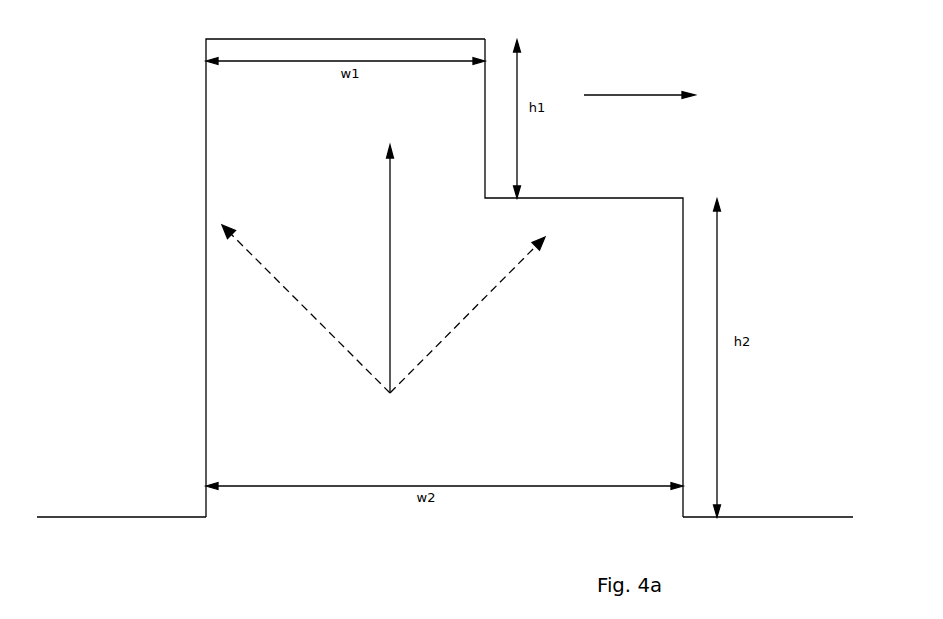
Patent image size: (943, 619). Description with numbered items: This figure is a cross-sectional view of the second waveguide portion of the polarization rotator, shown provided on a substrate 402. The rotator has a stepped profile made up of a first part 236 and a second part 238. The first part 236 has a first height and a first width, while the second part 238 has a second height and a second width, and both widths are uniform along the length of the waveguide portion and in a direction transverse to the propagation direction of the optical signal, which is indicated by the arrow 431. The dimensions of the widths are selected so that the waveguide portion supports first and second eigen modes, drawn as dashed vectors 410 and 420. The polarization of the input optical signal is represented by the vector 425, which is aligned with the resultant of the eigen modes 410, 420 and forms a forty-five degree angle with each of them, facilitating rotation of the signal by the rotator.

The first part 236 is at (206, 129).
The second part 238 is at (205, 328).
The substrate 402 is at (82, 516).
The first eigen mode 410 is at (285, 289).
The second eigen mode 420 is at (473, 308).
The polarization vector 425 is at (389, 195).
The arrow 431 is at (652, 94).